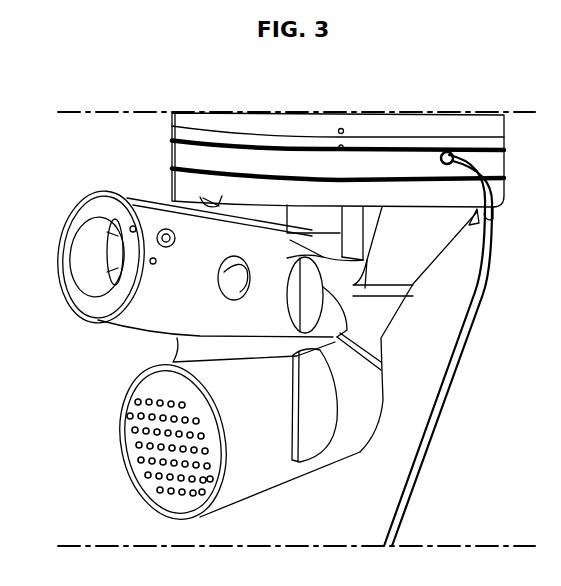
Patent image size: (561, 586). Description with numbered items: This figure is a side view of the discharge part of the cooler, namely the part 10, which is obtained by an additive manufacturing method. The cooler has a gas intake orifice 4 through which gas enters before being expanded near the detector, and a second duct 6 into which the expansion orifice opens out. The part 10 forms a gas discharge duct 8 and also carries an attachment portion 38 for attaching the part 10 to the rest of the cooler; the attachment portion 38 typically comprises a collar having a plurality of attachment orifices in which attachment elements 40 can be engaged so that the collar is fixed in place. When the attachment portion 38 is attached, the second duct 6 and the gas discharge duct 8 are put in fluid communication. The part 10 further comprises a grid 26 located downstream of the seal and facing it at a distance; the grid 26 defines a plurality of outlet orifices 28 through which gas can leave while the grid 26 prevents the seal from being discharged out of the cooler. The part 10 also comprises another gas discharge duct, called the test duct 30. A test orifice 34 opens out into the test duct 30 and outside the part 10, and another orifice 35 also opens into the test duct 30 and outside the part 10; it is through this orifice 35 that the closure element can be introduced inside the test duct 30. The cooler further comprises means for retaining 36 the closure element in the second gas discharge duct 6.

The gas intake orifice 4 is at (449, 158).
The second duct 6 is at (456, 377).
The gas discharge duct 8 is at (267, 467).
The part 10 is at (263, 492).
The grid 26 is at (135, 458).
The outlet orifices 28 is at (165, 490).
The test duct 30 is at (150, 313).
The test orifice 34 is at (238, 279).
The orifice 35 is at (91, 277).
The means for retaining 36 is at (110, 233).
The attachment portion 38 is at (183, 159).
The attachment elements 40 is at (312, 219).